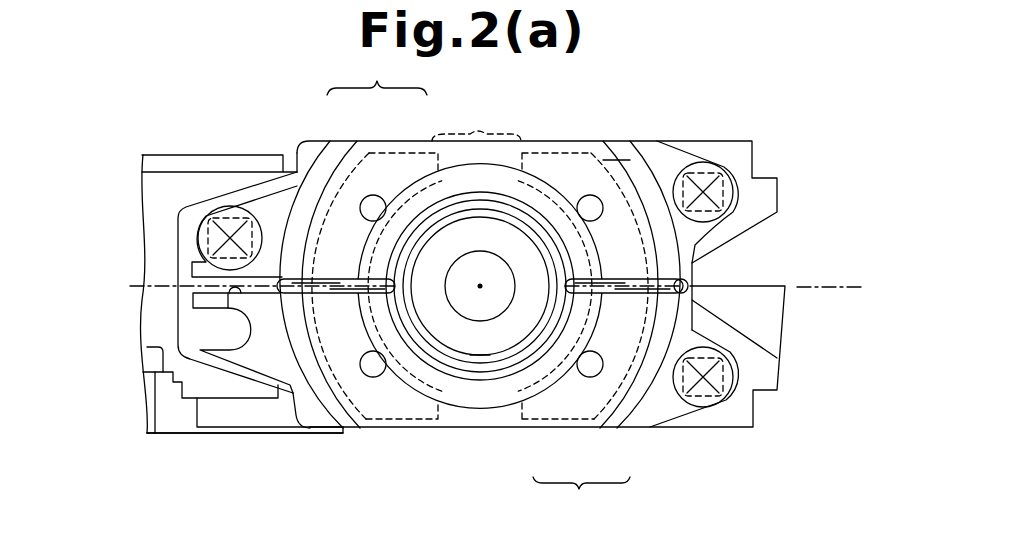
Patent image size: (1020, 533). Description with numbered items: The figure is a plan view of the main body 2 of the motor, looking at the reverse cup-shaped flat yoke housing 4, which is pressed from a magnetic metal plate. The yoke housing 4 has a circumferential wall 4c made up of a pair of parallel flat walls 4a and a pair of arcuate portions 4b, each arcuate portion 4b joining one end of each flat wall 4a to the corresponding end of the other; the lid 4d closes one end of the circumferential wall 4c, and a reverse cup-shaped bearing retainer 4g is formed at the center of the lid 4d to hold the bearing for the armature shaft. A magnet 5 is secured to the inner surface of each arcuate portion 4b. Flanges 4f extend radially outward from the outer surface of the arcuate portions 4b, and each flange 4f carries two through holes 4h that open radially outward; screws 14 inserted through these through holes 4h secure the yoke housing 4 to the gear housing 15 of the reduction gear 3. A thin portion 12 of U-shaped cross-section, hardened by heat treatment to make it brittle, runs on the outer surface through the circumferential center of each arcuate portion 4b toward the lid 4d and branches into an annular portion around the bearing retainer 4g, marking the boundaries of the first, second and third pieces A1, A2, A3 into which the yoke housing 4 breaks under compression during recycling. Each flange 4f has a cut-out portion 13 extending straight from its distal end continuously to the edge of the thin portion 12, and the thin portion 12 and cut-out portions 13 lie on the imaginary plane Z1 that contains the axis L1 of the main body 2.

The main body 2 is at (553, 140).
The reduction gear 3 is at (141, 383).
The yoke housing 4 is at (610, 140).
The flat wall 4a is at (405, 140).
The arcuate portion 4b is at (345, 140).
The circumferential wall 4c is at (478, 288).
The lid 4d is at (450, 428).
The flange 4f is at (258, 203).
The bearing retainer 4g is at (510, 233).
The through hole 4h is at (198, 216).
The magnet 5 is at (478, 128).
The thin portion 12 is at (413, 237).
The cut-out portion 13 is at (692, 282).
The screw 14 is at (198, 236).
The gear housing 15 is at (160, 413).
The first piece A1 is at (383, 428).
The second piece A2 is at (628, 173).
The third piece A3 is at (481, 348).
The axis L1 is at (480, 288).
The imaginary plane Z1 is at (835, 283).